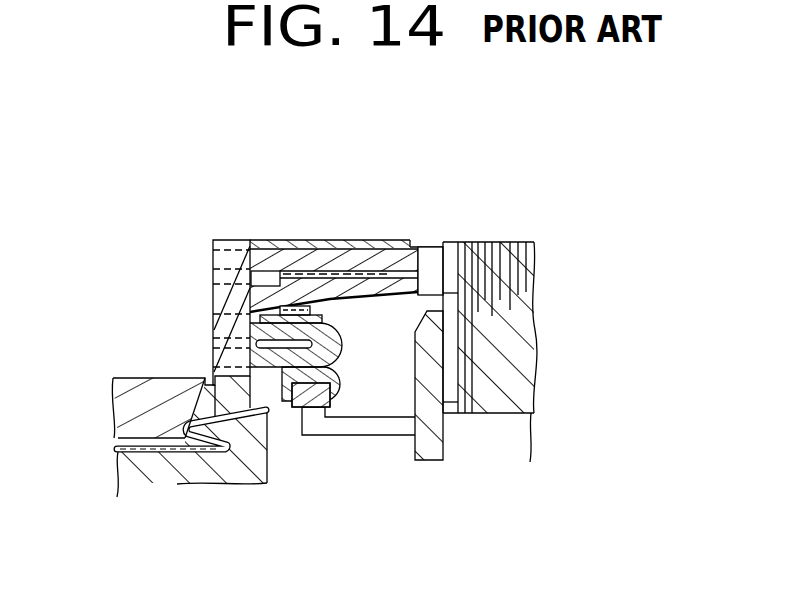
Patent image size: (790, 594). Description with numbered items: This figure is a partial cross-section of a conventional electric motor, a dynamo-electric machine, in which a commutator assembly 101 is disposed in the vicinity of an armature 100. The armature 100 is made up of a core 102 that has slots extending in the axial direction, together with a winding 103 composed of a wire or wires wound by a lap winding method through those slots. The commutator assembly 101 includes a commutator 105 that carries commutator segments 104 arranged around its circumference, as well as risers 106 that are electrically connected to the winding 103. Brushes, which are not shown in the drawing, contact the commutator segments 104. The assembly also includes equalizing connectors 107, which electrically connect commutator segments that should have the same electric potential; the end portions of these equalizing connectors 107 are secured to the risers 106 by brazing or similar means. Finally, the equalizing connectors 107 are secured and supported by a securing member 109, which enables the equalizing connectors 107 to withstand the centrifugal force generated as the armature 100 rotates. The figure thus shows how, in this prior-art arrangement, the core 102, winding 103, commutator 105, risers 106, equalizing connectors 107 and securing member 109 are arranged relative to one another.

The armature 100 is at (547, 237).
The commutator assembly 101 is at (167, 312).
The core 102 is at (497, 413).
The winding 103 is at (390, 237).
The commutator segments 104 is at (140, 378).
The commutator 105 is at (110, 418).
The risers 106 is at (212, 283).
The equalizing connectors 107 is at (276, 372).
The securing member 109 is at (357, 425).